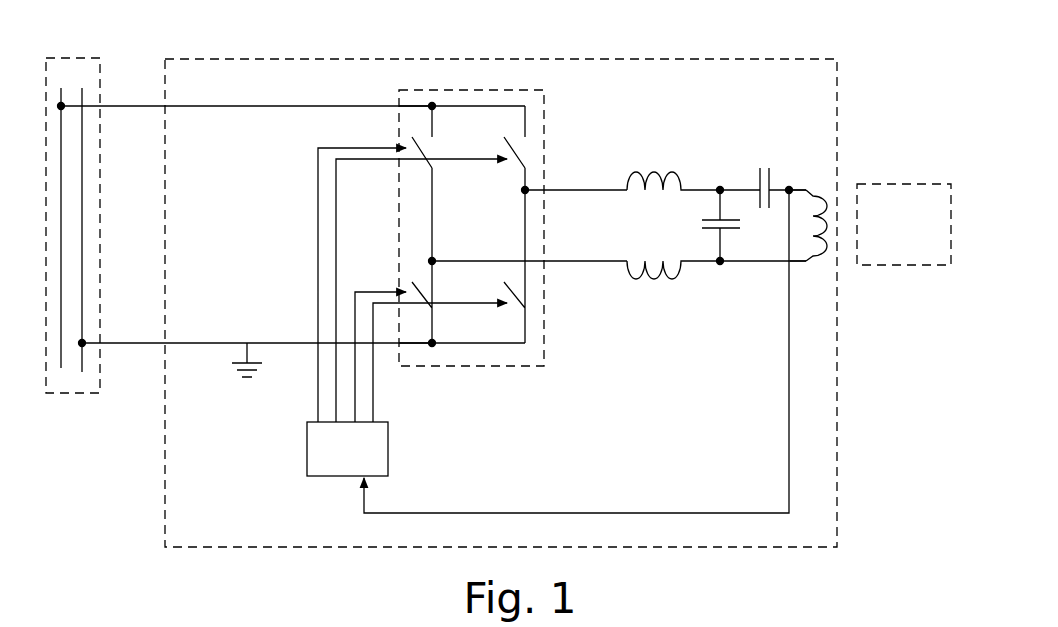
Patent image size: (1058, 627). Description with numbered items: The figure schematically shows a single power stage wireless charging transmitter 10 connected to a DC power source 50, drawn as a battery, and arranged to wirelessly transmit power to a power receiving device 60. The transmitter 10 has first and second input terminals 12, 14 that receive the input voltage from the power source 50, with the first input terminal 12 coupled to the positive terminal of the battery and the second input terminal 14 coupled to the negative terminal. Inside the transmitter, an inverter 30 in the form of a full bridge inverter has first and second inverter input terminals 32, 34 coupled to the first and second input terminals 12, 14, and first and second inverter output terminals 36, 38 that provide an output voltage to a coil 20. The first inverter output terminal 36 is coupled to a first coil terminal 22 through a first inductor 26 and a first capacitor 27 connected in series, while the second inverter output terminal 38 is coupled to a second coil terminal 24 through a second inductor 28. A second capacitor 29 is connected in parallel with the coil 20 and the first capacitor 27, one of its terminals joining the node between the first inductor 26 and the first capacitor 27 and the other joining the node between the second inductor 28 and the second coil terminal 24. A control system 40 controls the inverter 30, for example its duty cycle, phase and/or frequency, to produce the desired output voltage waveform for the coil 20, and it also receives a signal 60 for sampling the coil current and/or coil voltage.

The single power stage wireless charging transmitter 10 is at (842, 443).
The first input terminal 12 is at (158, 112).
The second input terminal 14 is at (158, 350).
The coil 20 is at (828, 207).
The first coil terminal 22 is at (810, 187).
The second coil terminal 24 is at (813, 258).
The first inductor 26 is at (662, 164).
The first capacitor 27 is at (770, 163).
The second inductor 28 is at (686, 280).
The second capacitor 29 is at (703, 212).
The inverter 30 is at (548, 349).
The first inverter input terminal 32 is at (397, 102).
The second inverter input terminal 34 is at (395, 348).
The first inverter output terminal 36 is at (553, 183).
The second inverter output terminal 38 is at (553, 268).
The control system 40 is at (391, 442).
The DC power source 50 is at (85, 400).
The power receiving device 60 is at (908, 268).